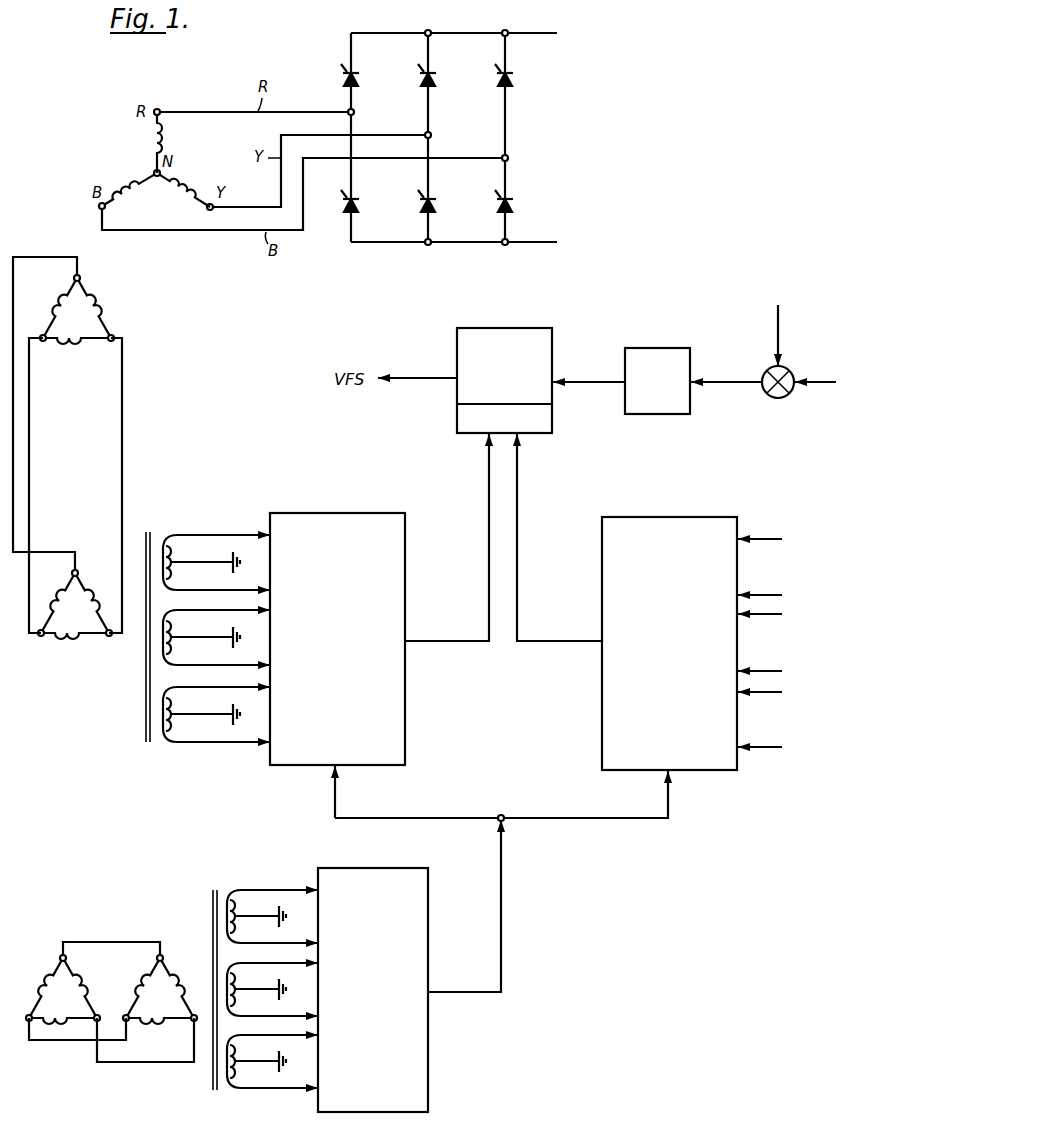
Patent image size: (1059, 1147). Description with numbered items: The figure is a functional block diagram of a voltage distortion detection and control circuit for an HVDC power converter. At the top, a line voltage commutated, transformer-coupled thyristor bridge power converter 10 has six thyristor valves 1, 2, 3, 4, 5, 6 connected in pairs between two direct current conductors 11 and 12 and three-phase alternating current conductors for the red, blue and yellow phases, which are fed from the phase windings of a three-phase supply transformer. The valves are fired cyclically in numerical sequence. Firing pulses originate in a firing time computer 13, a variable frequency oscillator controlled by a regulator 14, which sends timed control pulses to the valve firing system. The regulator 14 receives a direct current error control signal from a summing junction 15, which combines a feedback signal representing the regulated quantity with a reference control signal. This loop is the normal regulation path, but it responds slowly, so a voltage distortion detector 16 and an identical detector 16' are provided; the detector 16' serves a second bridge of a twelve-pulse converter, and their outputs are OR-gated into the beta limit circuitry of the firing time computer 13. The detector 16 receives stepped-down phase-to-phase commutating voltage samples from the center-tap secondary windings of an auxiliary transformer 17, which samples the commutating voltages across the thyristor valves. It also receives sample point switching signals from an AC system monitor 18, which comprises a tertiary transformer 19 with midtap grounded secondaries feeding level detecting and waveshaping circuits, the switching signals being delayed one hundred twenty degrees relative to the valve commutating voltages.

The thyristor valve 1 is at (359, 79).
The thyristor valve 2 is at (513, 205).
The thyristor valve 3 is at (436, 79).
The thyristor valve 4 is at (359, 205).
The thyristor valve 5 is at (513, 79).
The thyristor valve 6 is at (436, 205).
The thyristor bridge power converter 10 is at (449, 138).
The direct current conductor 11 is at (470, 33).
The direct current conductor 12 is at (462, 245).
The firing time computer 13 is at (528, 328).
The regulator 14 is at (657, 348).
The summing junction 15 is at (768, 397).
The voltage distortion detector 16 is at (275, 620).
The voltage distortion detector 16' is at (692, 623).
The auxiliary transformer 17 is at (132, 663).
The AC system monitor 18 is at (365, 1113).
The tertiary transformer 19 is at (203, 951).